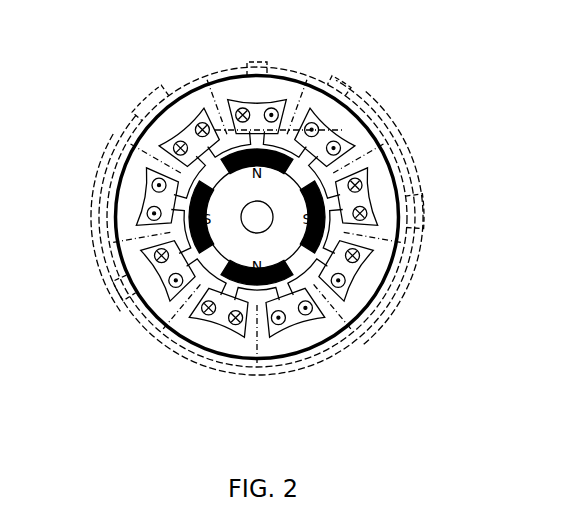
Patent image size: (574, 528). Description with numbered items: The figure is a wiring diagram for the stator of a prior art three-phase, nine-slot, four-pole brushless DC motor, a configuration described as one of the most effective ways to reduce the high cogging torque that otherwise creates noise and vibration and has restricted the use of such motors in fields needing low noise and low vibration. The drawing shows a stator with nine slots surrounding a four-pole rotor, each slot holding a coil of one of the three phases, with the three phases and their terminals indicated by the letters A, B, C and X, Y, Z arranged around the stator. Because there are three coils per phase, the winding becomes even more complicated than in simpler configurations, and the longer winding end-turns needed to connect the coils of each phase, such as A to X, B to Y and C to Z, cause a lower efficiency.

The phase C coil terminal C is at (176, 146).
The phase Z coil terminal Z is at (338, 146).
The phase X coil terminal X is at (150, 204).
The phase B coil terminal B is at (372, 200).
The phase A coil terminal A is at (226, 337).
The phase Y coil terminal Y is at (315, 345).